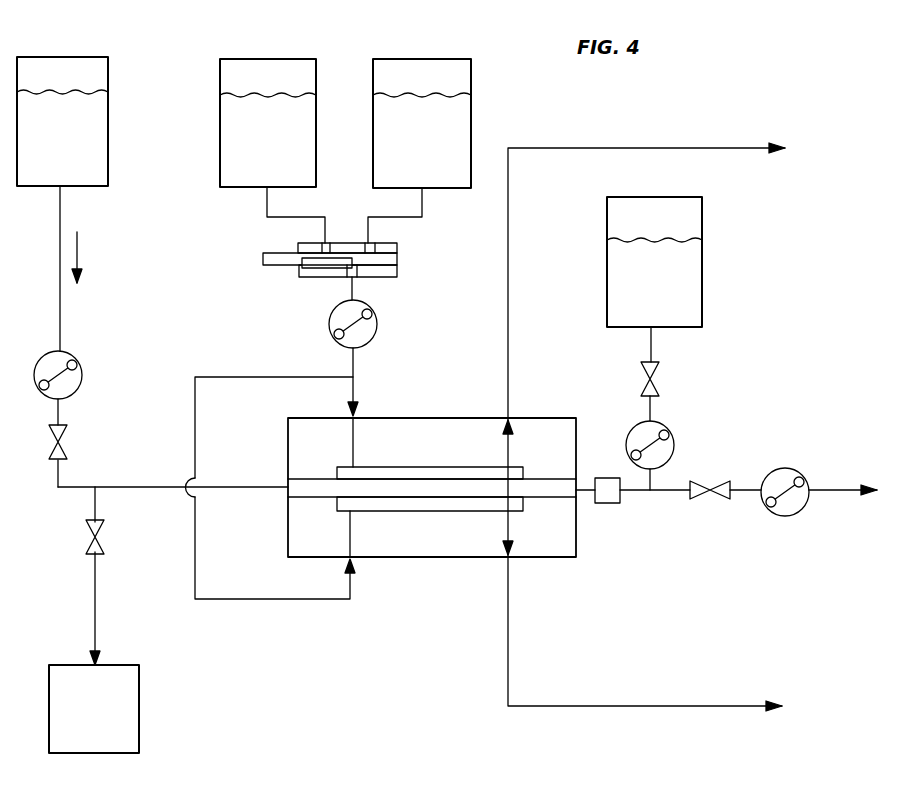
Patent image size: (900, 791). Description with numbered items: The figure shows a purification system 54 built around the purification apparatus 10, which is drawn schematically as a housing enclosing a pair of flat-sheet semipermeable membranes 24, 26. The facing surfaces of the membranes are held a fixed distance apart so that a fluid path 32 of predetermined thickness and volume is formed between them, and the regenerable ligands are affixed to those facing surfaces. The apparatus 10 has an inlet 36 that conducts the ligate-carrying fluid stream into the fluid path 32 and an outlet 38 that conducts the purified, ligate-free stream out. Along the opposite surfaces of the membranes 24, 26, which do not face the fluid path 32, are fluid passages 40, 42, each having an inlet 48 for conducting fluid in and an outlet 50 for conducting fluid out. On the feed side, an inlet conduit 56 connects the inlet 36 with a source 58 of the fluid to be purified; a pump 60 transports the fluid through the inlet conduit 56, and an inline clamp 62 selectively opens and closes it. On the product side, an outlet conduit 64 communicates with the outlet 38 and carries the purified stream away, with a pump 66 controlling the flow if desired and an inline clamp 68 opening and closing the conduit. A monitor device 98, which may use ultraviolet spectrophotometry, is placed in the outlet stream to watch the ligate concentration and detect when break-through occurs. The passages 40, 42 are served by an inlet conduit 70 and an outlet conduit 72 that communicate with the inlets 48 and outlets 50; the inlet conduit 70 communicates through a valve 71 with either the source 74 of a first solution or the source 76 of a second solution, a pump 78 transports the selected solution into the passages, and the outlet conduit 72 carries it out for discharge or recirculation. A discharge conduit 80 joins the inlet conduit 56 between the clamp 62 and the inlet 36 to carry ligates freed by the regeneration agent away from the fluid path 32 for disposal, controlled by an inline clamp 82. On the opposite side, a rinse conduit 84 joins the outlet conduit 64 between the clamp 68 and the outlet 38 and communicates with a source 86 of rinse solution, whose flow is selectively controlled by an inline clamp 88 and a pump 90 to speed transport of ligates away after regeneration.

The purification apparatus 10 is at (460, 580).
The semipermeable membrane 24 is at (355, 481).
The semipermeable membrane 26 is at (362, 500).
The fluid path 32 is at (450, 484).
The inlet 36 is at (276, 468).
The outlet 38 is at (586, 472).
The fluid passage 40 is at (416, 472).
The fluid passage 42 is at (410, 504).
The passage inlet 48 is at (360, 408).
The passage outlet 50 is at (512, 410).
The purification system 54 is at (706, 104).
The inlet conduit 56 is at (76, 488).
The source of fluid to be purified 58 is at (97, 72).
The pump 60 is at (72, 383).
The inline clamp 62 is at (64, 453).
The outlet conduit 64 is at (640, 492).
The pump 66 is at (794, 510).
The inline clamp 68 is at (716, 499).
The inlet conduit 70 is at (352, 378).
The valve 71 is at (394, 256).
The outlet conduit 72 is at (508, 372).
The source of first solution 74 is at (306, 77).
The source of second solution 76 is at (465, 76).
The pump 78 is at (370, 336).
The discharge conduit 80 is at (96, 603).
The inline clamp 82 is at (103, 545).
The rinse conduit 84 is at (653, 408).
The source of rinse solution 86 is at (686, 218).
The inline clamp 88 is at (660, 372).
The pump 90 is at (672, 452).
The monitor device 98 is at (610, 504).